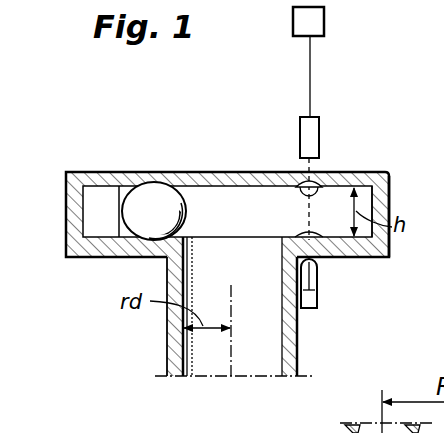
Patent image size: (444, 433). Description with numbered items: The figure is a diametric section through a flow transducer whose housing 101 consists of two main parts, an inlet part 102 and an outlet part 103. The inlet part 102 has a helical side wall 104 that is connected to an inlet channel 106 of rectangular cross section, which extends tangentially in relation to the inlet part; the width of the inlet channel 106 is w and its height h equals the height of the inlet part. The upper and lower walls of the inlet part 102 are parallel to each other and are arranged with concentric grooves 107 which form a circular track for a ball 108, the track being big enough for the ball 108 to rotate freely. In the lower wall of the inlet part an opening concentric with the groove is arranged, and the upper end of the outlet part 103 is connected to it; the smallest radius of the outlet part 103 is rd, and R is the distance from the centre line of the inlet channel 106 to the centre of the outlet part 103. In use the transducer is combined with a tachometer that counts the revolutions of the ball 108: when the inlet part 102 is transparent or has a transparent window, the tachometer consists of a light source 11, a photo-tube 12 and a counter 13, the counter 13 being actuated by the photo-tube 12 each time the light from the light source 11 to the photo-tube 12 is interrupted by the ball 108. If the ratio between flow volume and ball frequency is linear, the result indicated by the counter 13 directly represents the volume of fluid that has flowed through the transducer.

The housing 101 is at (236, 171).
The inlet part 102 is at (196, 172).
The outlet part 103 is at (287, 343).
The side wall 104 is at (378, 200).
The inlet channel 106 is at (97, 212).
The concentric grooves 107 is at (320, 194).
The ball 108 is at (147, 197).
The light source 11 is at (308, 277).
The photo-tube 12 is at (313, 135).
The counter 13 is at (322, 20).